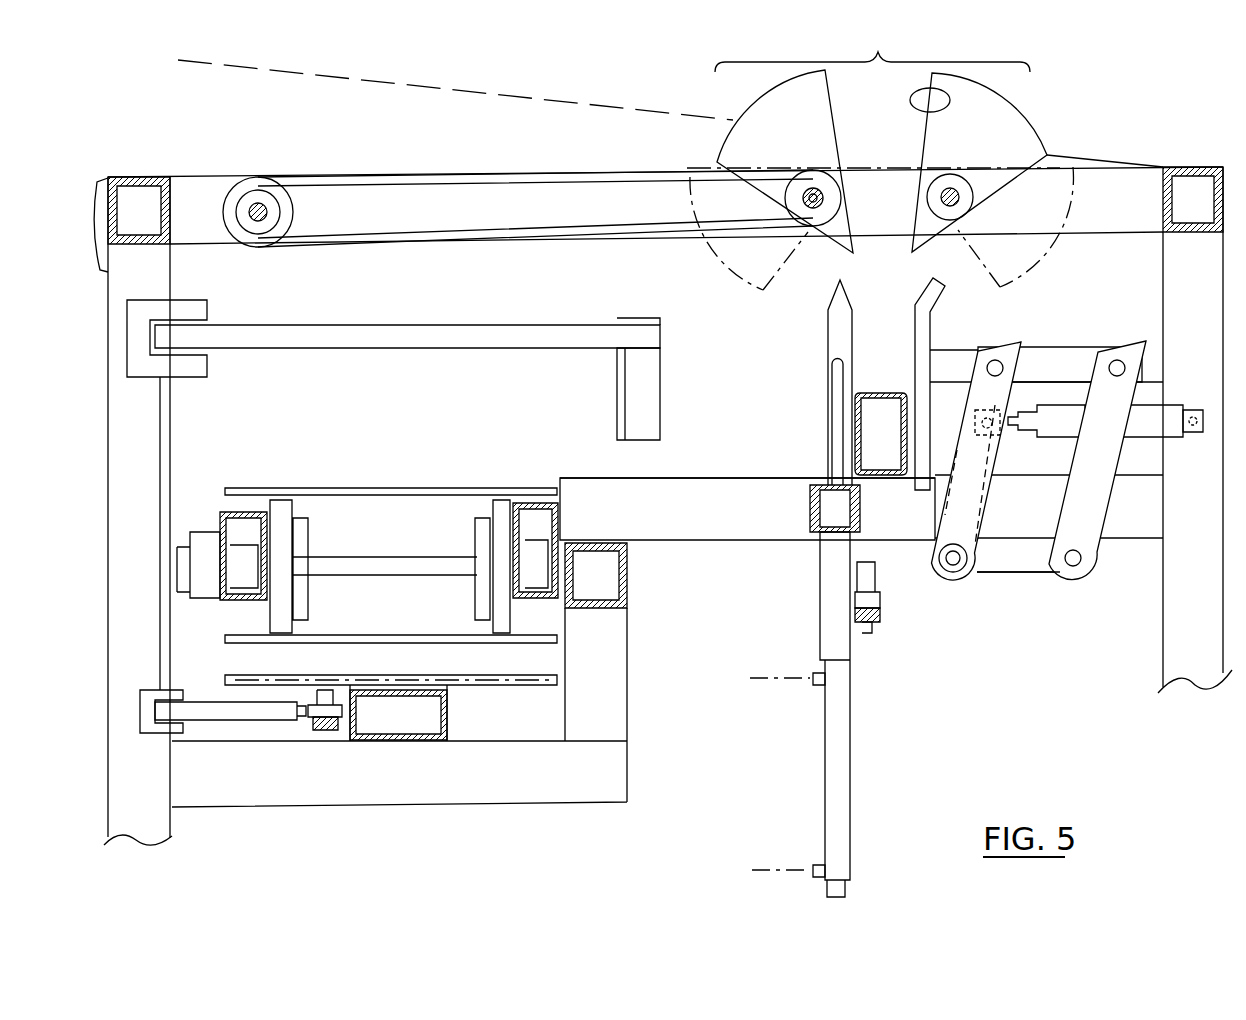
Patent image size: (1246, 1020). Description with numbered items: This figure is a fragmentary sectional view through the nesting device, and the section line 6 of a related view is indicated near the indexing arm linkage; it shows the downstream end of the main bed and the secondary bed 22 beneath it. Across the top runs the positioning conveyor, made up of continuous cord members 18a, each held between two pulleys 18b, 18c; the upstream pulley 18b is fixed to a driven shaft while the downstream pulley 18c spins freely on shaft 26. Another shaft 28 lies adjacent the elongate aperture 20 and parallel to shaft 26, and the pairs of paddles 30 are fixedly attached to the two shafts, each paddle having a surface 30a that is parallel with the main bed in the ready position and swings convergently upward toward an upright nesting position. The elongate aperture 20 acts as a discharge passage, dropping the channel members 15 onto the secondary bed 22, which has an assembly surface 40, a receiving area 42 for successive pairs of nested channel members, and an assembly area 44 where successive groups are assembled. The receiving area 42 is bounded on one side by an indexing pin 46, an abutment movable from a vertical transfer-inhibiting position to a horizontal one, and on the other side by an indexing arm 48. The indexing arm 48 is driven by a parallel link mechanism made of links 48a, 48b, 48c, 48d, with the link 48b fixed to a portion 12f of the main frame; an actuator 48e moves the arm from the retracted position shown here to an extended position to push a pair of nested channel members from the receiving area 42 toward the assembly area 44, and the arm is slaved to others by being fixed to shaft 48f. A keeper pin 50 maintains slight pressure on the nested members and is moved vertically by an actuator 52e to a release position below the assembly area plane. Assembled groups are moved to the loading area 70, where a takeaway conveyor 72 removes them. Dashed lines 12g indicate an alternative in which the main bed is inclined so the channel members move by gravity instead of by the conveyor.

The pivot base 6 is at (1018, 595).
The portion of the main frame 12f is at (1142, 508).
The dashed lines 12g is at (461, 92).
The channel member 15 is at (882, 393).
The continuous cord member 18a is at (363, 177).
The pulley 18b is at (258, 182).
The pulley 18c is at (803, 217).
The elongate aperture 20 is at (881, 162).
The secondary bed 22 is at (741, 462).
The shaft 26 is at (803, 190).
The shaft 28 is at (957, 204).
The paddle 30 is at (873, 156).
The surface 30a is at (1005, 98).
The assembly surface 40 is at (685, 476).
The receiving area 42 is at (893, 300).
The assembly area 44 is at (695, 370).
The indexing pin 46 is at (835, 330).
The indexing arm 48 is at (925, 332).
The link 48a is at (1060, 366).
The link 48b is at (1007, 552).
The link 48c is at (1092, 512).
The link 48d is at (958, 503).
The actuator 48e is at (1145, 418).
The shaft 48f is at (945, 560).
The keeper pin 50 is at (833, 383).
The actuator 52e is at (835, 785).
The loading area 70 is at (372, 432).
The takeaway conveyor 72 is at (387, 488).